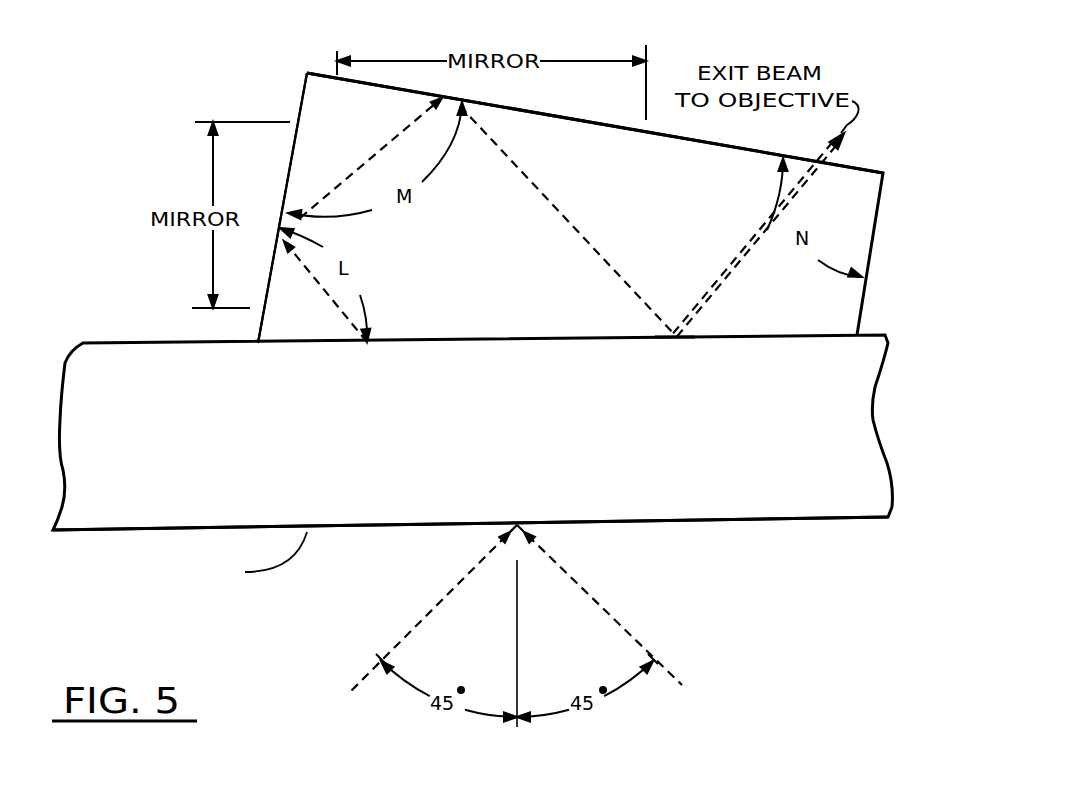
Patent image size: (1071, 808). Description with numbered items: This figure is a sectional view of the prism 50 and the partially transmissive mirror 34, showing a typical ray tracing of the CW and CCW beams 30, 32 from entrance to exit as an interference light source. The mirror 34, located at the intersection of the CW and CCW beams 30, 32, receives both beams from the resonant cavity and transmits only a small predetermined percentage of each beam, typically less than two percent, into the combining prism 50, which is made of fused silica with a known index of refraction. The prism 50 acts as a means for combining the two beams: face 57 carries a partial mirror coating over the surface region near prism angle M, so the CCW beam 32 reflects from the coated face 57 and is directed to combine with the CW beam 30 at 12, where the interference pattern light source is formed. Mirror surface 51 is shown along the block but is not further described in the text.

The face 57 is at (290, 173).
The prism 50 is at (622, 205).
The partially transmissive mirror 34 is at (759, 444).
The mirror 51 is at (718, 520).
The interference pattern light source 12 is at (677, 333).
The CW beam 30 is at (434, 607).
The CCW beam 32 is at (603, 610).